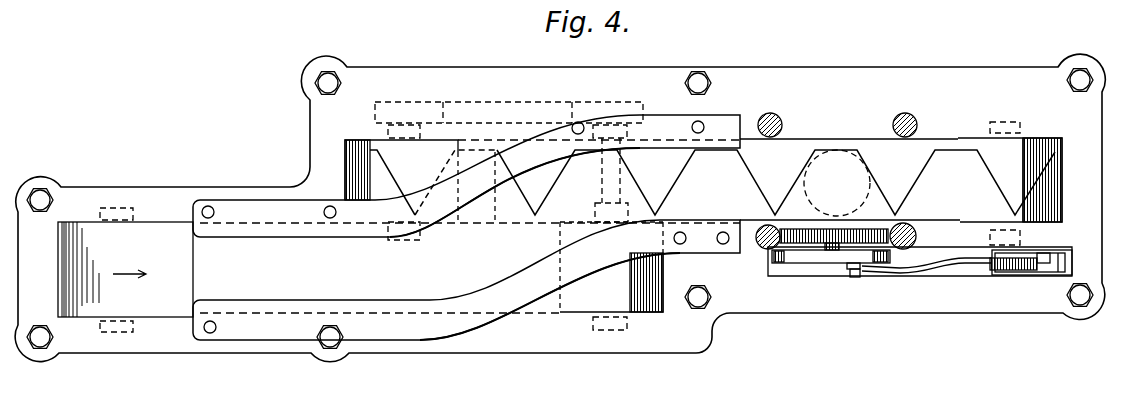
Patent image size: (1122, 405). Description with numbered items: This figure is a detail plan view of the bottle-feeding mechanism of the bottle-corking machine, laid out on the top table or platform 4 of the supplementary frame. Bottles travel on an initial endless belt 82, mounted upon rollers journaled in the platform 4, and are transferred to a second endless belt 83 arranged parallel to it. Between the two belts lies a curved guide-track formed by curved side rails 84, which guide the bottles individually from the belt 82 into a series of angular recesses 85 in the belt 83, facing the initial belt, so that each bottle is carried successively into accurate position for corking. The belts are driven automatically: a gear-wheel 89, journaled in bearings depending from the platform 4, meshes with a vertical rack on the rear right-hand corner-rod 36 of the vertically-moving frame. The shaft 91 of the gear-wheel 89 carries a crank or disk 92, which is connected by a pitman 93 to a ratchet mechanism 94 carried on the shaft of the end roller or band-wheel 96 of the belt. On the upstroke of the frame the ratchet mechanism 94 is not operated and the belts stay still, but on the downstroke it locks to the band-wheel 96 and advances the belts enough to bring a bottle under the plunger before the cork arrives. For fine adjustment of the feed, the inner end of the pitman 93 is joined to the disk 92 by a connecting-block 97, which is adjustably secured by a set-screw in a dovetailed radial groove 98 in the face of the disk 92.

The top table or platform 4 is at (560, 208).
The endless belt 82 is at (160, 270).
The curved side rails 84 is at (466, 227).
The angular recesses 85 is at (703, 216).
The endless belt 83 is at (814, 178).
The rear right-hand corner-rod 36 is at (764, 248).
The dovetailed radial groove 98 is at (912, 234).
The gear-wheel 89 is at (812, 243).
The end roller or band-wheel 96 is at (786, 252).
The shaft 91 is at (833, 250).
The crank or disk 92 is at (860, 258).
The connecting-block 97 is at (852, 270).
The pitman 93 is at (936, 265).
The ratchet mechanism 94 is at (1018, 272).